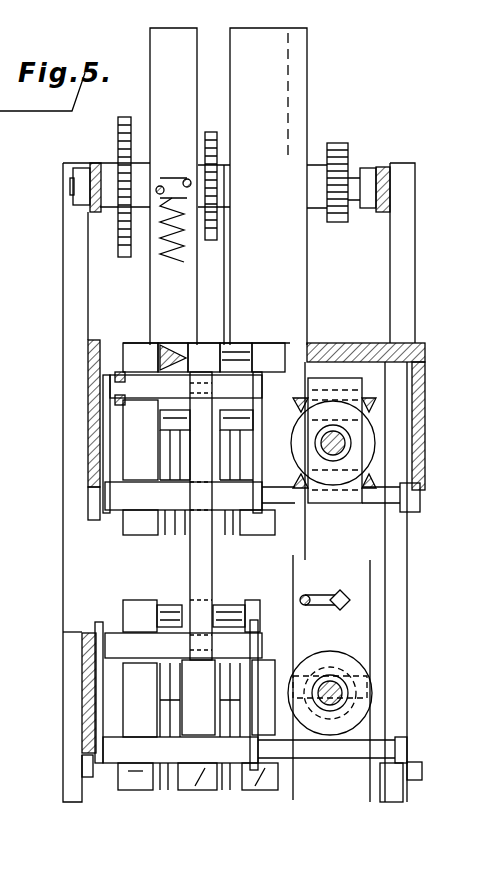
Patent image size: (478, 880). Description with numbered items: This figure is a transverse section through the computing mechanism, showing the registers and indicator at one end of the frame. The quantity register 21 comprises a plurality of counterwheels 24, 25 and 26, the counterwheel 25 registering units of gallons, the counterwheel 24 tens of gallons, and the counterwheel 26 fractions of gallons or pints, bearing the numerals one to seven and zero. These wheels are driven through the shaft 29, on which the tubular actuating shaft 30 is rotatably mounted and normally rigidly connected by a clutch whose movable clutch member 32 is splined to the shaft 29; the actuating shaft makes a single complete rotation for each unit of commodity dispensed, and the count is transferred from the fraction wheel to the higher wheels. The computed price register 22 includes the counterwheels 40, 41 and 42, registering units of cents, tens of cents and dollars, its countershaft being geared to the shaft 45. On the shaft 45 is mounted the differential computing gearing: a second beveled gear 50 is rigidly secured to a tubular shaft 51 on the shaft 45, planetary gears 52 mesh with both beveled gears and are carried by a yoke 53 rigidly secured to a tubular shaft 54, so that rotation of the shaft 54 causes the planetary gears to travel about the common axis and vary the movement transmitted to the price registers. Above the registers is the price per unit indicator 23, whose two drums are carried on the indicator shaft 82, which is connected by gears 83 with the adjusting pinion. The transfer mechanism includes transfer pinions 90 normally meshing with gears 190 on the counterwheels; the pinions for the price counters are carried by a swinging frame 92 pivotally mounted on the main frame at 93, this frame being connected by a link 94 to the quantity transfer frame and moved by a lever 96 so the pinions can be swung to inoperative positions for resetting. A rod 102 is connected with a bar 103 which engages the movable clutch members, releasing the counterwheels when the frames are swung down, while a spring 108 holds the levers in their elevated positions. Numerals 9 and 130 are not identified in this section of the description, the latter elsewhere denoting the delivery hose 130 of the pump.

The housing 9 is at (163, 482).
The quantity register 21 is at (137, 595).
The computed price register 22 is at (108, 288).
The price per unit indicator 23 is at (330, 90).
The counterwheel 24 is at (262, 618).
The counterwheel 25 is at (222, 605).
The counterwheel 26 is at (143, 605).
The shaft 29 is at (348, 700).
The actuating shaft 30 is at (345, 680).
The clutch member 32 is at (328, 656).
The counterwheel 40 is at (272, 540).
The counterwheel 41 is at (183, 535).
The counterwheel 42 is at (118, 300).
The shaft 45 is at (370, 463).
The beveled gear 50 is at (370, 420).
The tubular shaft 51 is at (345, 448).
The planetary gears 52 is at (440, 475).
The yoke 53 is at (362, 388).
The tubular shaft 54 is at (352, 435).
The indicator shaft 82 is at (381, 253).
The gears 83 is at (348, 155).
The transfer pinions 90 is at (190, 345).
The swinging frame 92 is at (103, 455).
The pivot 93 is at (420, 497).
The link 94 is at (202, 516).
The lever 96 is at (115, 400).
The rod 102 is at (317, 590).
The bar 103 is at (331, 661).
The spring 108 is at (165, 262).
The delivery hose 130 is at (236, 788).
The gears 190 is at (235, 540).